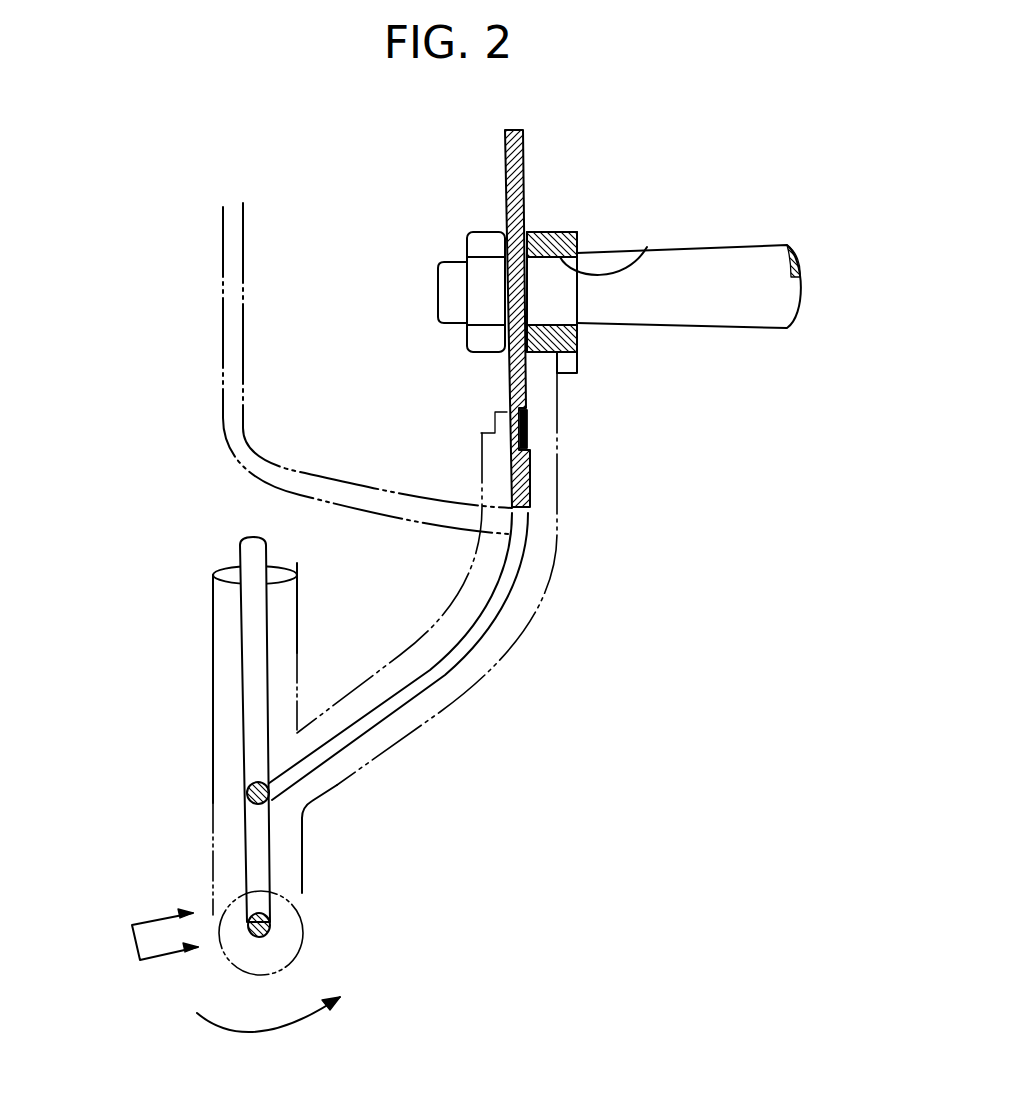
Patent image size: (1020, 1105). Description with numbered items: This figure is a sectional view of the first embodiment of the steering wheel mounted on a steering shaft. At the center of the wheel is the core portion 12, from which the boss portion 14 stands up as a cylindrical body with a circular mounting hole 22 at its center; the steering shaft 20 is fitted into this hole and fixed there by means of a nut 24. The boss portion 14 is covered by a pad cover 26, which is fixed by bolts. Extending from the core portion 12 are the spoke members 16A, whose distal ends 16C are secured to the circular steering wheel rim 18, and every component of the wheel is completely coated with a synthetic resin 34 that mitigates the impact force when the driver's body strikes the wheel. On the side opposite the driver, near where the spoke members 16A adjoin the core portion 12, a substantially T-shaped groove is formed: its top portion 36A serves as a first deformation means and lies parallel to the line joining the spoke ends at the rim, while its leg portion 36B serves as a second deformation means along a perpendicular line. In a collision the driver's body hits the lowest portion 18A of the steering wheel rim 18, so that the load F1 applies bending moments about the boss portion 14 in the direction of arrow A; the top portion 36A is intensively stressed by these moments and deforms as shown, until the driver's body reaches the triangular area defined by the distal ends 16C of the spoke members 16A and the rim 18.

The core portion 12 is at (523, 178).
The boss portion 14 is at (565, 232).
The steering wheel rim 18 is at (240, 625).
The lowest portion of the steering wheel rim 18A is at (303, 929).
The spoke members 16A is at (477, 637).
The distal ends of the spoke members 16C is at (247, 790).
The steering shaft 20 is at (721, 243).
The circular mounting hole 22 is at (647, 247).
The nut 24 is at (478, 232).
The pad cover 26 is at (224, 432).
The synthetic resin 34 is at (303, 865).
The top portion of the T-shaped groove 36A is at (520, 418).
The leg portion of the T-shaped groove 36B is at (530, 438).
The load F1 is at (145, 936).
The arrow A is at (280, 1038).